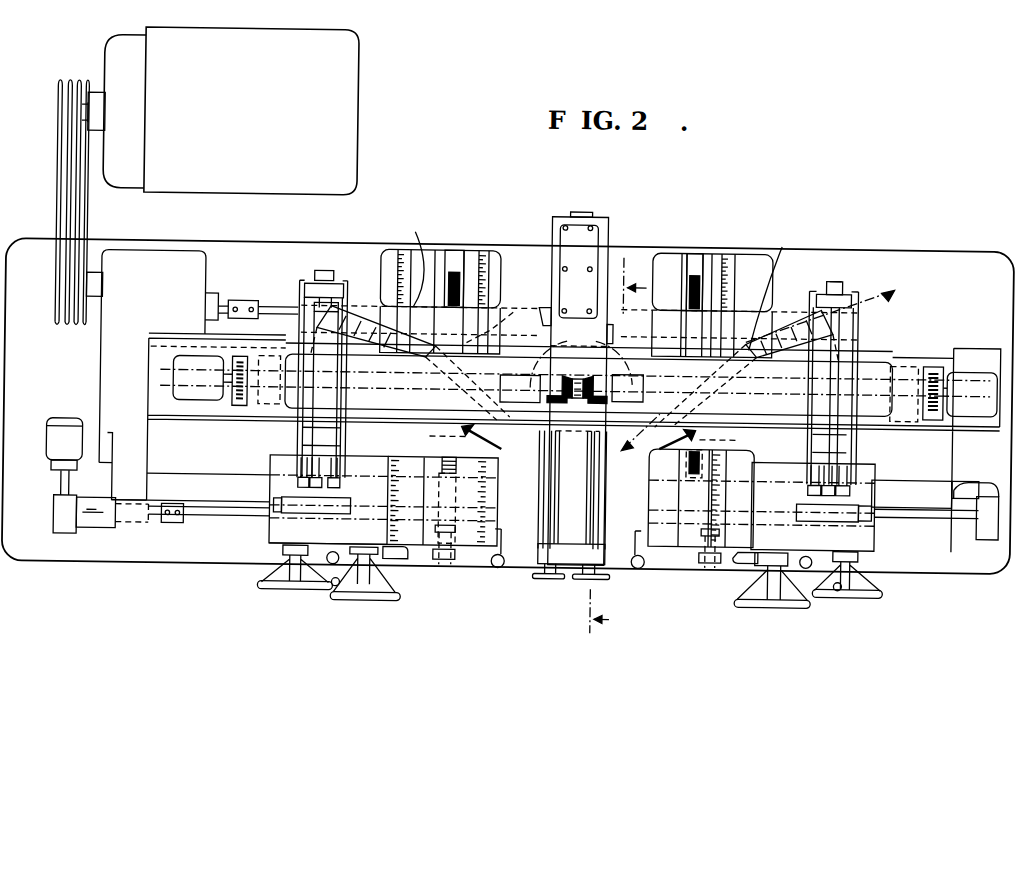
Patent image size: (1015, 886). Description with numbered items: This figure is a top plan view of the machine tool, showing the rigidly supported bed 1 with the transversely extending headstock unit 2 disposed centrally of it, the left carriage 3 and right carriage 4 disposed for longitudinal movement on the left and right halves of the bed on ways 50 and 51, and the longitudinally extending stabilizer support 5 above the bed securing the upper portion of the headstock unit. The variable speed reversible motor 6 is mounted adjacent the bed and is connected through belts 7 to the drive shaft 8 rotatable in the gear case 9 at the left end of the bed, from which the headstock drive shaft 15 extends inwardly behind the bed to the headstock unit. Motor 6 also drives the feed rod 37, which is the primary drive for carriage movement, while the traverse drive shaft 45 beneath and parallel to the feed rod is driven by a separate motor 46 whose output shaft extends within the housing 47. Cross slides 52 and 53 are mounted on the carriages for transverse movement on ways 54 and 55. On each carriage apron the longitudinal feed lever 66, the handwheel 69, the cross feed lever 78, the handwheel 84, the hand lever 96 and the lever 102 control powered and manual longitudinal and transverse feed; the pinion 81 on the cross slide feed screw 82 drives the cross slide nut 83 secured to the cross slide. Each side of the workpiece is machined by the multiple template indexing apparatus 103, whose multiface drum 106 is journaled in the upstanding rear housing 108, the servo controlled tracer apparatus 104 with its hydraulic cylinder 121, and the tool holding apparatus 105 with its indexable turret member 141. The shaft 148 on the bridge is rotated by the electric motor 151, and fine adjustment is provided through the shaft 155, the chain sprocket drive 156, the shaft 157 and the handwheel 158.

The bed 1 is at (205, 505).
The headstock unit 2 is at (607, 254).
The left carriage 3 is at (270, 546).
The right carriage 4 is at (880, 551).
The stabilizer support 5 is at (884, 357).
The variable speed reversible motor 6 is at (357, 70).
The belts 7 is at (70, 159).
The drive shaft 8 is at (88, 278).
The gear case 9 is at (102, 366).
The headstock drive shaft 15 is at (270, 310).
The feed rod 37 is at (963, 478).
The traverse drive shaft 45 is at (248, 519).
The motor 46 is at (62, 424).
The housing 47 is at (55, 528).
The ways 50 is at (240, 304).
The ways 51 is at (948, 348).
The cross slide 52 is at (390, 461).
The cross slide 53 is at (748, 452).
The ways 54 is at (472, 251).
The ways 55 is at (680, 251).
The longitudinal feed lever 66 is at (285, 553).
The handwheel 69 is at (270, 592).
The cross feed lever 78 is at (386, 562).
The pinion 81 is at (440, 542).
The cross slide feed screw 82 is at (443, 463).
The cross slide nut 83 is at (500, 316).
The handwheel 84 is at (370, 603).
The hand lever 96 is at (330, 590).
The lever 102 is at (500, 568).
The multiple template indexing apparatus 103 is at (322, 273).
The servo controlled tracer apparatus 104 is at (429, 235).
The tool holding apparatus 105 is at (536, 473).
The template holder or multiface drum 106 is at (320, 443).
The rear housing 108 is at (838, 290).
The hydraulic cylinder 121 is at (342, 320).
The indexable turret member 141 is at (446, 438).
The shaft 148 is at (607, 344).
The electric motor 151 is at (180, 363).
The shaft 155 is at (593, 466).
The chain sprocket drive 156 is at (586, 530).
The shaft 157 is at (535, 578).
The handwheel 158 is at (575, 581).